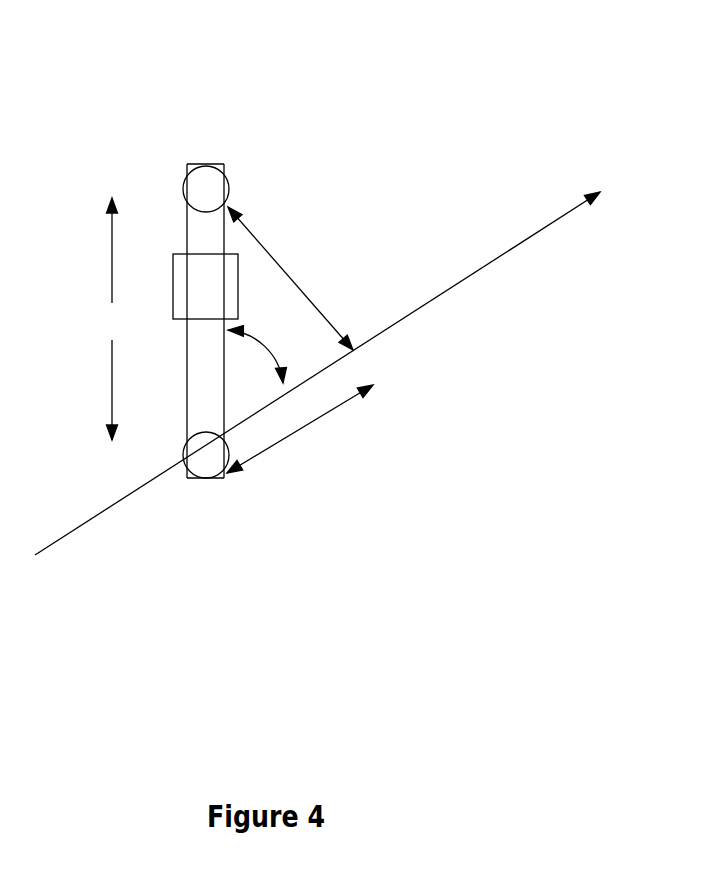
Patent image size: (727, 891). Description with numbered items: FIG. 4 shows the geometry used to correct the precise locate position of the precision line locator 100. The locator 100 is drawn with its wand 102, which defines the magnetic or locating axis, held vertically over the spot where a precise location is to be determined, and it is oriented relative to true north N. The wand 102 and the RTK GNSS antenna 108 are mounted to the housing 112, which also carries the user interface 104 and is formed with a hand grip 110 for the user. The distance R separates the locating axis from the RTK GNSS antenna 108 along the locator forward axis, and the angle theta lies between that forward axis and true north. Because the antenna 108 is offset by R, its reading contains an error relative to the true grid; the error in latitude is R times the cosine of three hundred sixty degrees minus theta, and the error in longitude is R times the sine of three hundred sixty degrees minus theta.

The precision line locator 100 is at (283, 118).
The wand structure 102 is at (225, 478).
The user interface 104 is at (225, 301).
The RTK GNSS antenna 108 is at (183, 187).
The hand grip 110 is at (187, 402).
The housing 112 is at (187, 365).